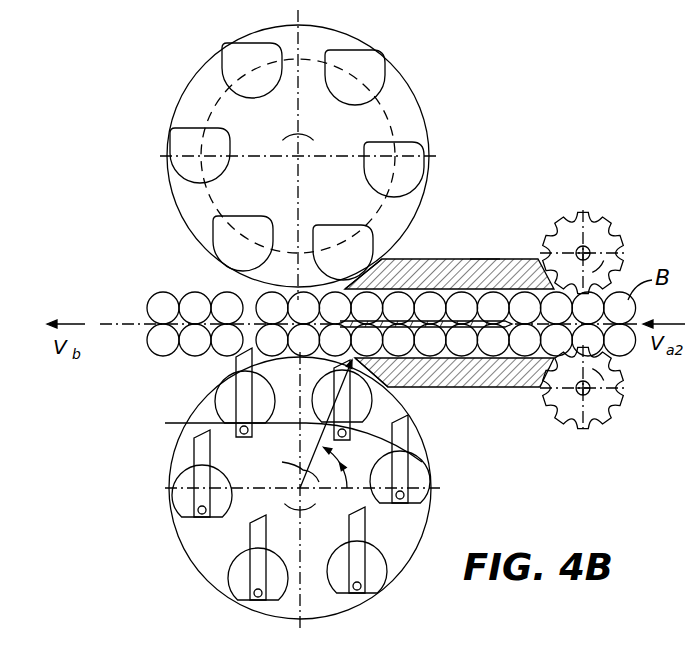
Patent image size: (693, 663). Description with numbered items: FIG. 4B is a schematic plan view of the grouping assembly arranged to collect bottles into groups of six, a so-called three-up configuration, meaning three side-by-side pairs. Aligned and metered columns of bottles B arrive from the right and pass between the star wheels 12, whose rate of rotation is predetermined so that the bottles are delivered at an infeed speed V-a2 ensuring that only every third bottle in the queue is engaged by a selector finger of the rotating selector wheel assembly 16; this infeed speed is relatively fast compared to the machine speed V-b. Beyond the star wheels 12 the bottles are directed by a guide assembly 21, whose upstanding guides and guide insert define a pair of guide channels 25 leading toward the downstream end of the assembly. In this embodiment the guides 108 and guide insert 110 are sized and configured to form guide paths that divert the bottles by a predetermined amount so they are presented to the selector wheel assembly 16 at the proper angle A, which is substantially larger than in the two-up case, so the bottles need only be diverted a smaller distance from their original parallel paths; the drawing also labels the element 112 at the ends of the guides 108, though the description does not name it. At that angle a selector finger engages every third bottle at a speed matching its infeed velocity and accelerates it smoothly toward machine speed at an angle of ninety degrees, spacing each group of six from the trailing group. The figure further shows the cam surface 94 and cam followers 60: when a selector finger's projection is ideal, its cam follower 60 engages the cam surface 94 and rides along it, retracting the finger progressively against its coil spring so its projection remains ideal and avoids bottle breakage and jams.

The selector wheel assembly 16 is at (393, 72).
The guide assembly 21 is at (527, 250).
The guide channels 25 is at (485, 288).
The guides 108 is at (502, 288).
The guide plate tip 112 is at (412, 289).
The guide insert 110 is at (461, 330).
The star wheels 12 is at (612, 230).
The cam surface 94 is at (400, 410).
The cam followers 60 is at (405, 500).